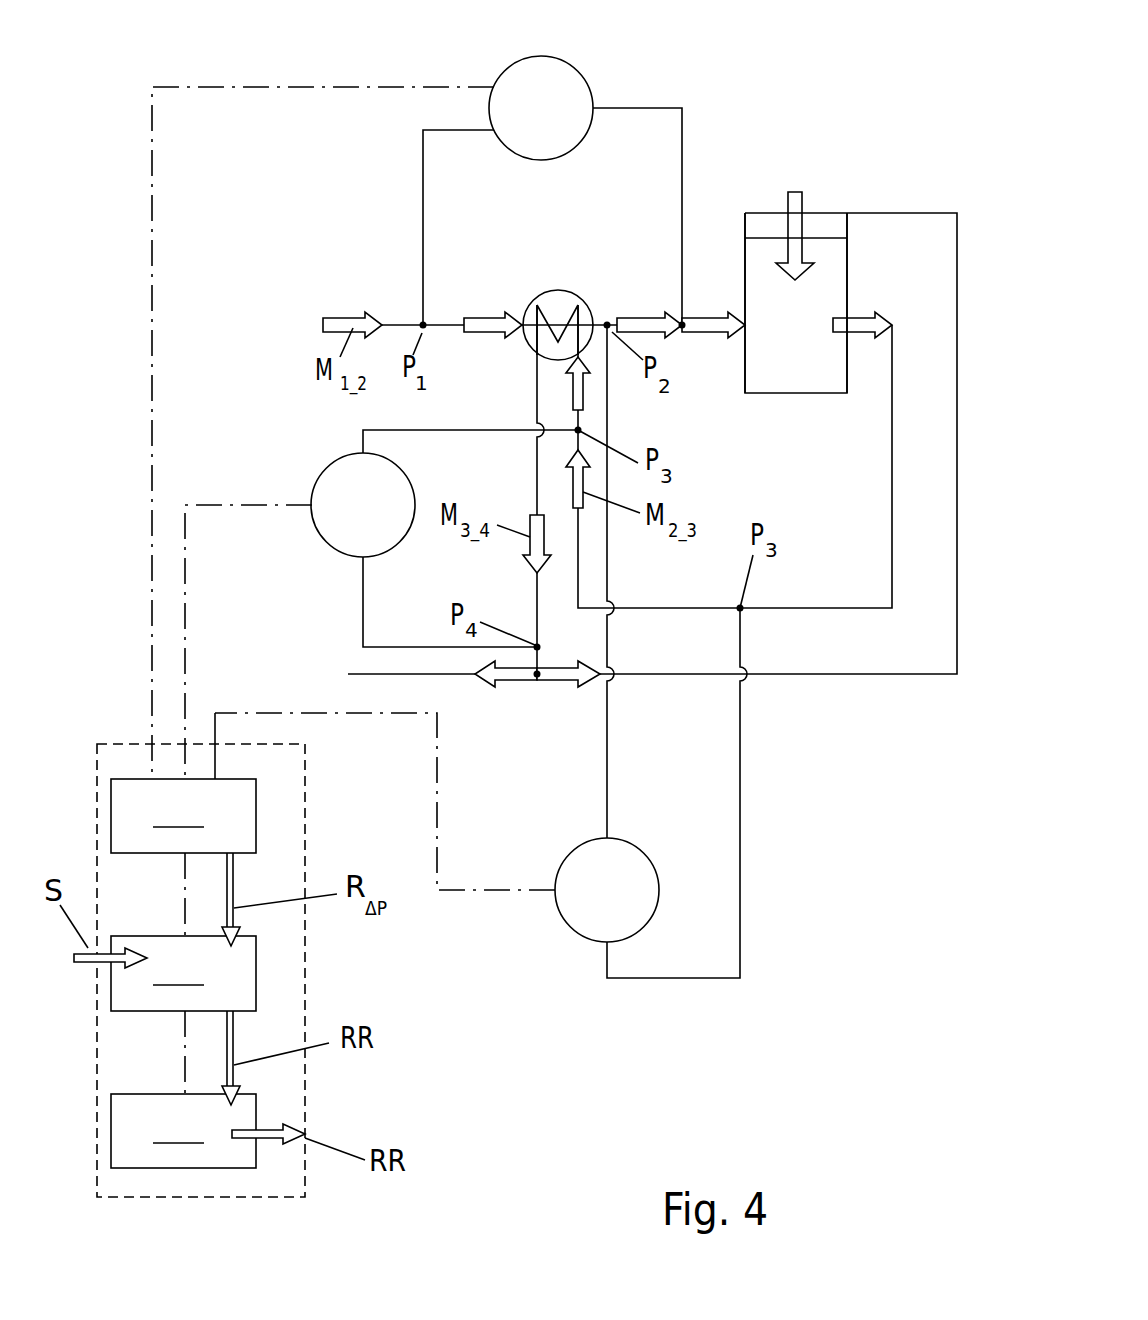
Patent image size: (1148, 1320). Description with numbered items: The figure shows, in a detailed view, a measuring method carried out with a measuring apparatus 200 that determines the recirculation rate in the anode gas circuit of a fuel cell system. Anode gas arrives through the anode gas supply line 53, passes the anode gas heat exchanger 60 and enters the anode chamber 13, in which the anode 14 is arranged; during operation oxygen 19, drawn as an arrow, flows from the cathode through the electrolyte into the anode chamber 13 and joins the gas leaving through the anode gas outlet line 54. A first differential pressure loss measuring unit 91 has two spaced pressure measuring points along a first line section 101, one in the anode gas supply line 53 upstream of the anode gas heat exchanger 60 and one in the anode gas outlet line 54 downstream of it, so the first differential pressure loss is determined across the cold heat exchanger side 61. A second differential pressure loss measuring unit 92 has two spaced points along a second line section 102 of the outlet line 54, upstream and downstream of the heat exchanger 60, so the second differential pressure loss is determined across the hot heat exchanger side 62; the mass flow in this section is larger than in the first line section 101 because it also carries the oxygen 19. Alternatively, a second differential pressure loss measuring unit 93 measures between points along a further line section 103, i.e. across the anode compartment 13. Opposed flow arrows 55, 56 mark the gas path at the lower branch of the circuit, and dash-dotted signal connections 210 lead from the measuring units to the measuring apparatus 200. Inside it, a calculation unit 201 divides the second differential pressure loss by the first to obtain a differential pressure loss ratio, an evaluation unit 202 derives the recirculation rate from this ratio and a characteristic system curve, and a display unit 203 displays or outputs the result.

The anode chamber 13 is at (788, 378).
The anode 14 is at (807, 358).
The oxygen 19 is at (803, 205).
The anode gas supply line 53 is at (343, 317).
The anode gas outlet line 54 is at (880, 312).
The flow direction arrow 55 is at (560, 682).
The flow direction arrow 56 is at (513, 682).
The anode gas heat exchanger 60 is at (557, 308).
The cold heat exchanger side 61 is at (493, 330).
The hot heat exchanger side 62 is at (585, 390).
The first differential pressure loss measuring unit 91 is at (582, 70).
The second differential pressure loss measuring unit 92 is at (315, 530).
The second differential pressure loss measuring unit 93 is at (577, 933).
The first line section 101 is at (497, 298).
The second line section 102 is at (543, 480).
The further line section 103 is at (708, 335).
The measuring apparatus 200 is at (305, 791).
The calculation unit 201 is at (183, 816).
The evaluation unit 202 is at (183, 973).
The display unit 203 is at (183, 1131).
The signal line 210 is at (225, 87).